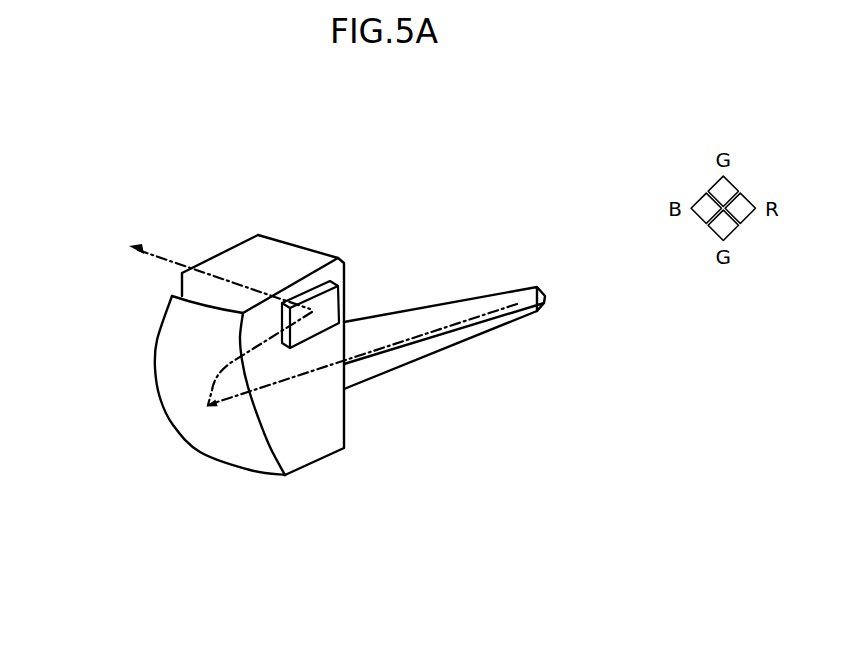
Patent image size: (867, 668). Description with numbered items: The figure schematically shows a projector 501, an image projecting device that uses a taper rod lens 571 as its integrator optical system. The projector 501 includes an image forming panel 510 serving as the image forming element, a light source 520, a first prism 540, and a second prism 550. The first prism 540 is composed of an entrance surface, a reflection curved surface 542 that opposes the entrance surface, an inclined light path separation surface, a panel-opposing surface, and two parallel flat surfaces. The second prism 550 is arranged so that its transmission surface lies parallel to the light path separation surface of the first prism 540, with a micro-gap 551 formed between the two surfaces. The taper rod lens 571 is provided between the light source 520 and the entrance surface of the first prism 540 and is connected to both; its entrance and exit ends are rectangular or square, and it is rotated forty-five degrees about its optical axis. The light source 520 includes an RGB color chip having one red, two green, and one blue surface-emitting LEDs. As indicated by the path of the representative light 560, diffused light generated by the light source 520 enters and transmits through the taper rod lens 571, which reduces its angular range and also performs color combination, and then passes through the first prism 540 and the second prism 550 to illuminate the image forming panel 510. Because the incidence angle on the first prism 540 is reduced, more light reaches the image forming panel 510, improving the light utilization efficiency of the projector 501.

The projector 501 is at (55, 88).
The image forming panel 510 is at (306, 333).
The light source 520 is at (530, 286).
The first prism 540 is at (155, 355).
The reflection curved surface 542 is at (187, 391).
The second prism 550 is at (267, 253).
The micro-gap 551 is at (283, 266).
The representative light 560 is at (158, 254).
The taper rod lens 571 is at (462, 345).